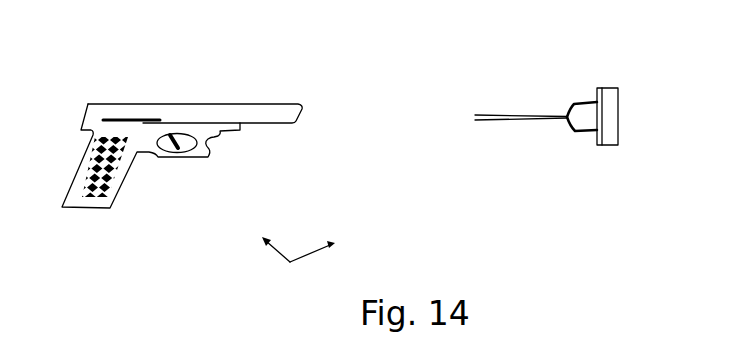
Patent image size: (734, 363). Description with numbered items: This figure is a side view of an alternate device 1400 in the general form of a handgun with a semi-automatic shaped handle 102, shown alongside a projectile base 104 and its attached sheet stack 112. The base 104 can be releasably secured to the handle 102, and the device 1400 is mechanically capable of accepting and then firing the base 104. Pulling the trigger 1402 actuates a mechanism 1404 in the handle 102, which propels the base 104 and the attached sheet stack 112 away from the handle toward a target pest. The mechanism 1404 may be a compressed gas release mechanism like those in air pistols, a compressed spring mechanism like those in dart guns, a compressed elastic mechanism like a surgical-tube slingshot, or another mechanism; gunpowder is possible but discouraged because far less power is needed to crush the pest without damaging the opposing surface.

The handle 102 is at (240, 103).
The projectile base 104 is at (595, 95).
The sheet stack 112 is at (607, 95).
The device 1400 is at (290, 262).
The trigger 1402 is at (173, 150).
The mechanism 1404 is at (112, 119).